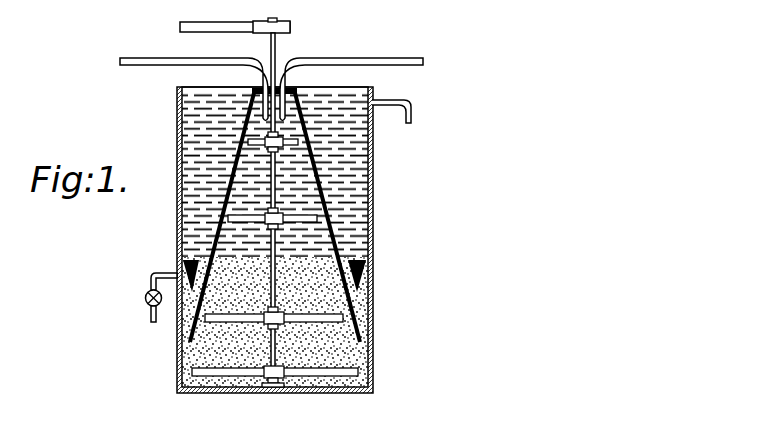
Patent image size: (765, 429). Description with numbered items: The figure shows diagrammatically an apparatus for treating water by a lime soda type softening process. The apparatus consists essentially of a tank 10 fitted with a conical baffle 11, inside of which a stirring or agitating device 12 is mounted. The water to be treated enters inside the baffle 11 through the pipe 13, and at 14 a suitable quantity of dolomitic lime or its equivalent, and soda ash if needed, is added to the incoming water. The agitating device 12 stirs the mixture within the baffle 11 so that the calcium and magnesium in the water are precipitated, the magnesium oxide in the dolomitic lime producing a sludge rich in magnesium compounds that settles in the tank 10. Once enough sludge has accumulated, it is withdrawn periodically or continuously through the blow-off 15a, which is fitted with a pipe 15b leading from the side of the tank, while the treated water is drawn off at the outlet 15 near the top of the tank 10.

The tank 10 is at (372, 228).
The conical baffle 11 is at (320, 199).
The stirring or agitating device 12 is at (217, 323).
The pipe 13 is at (140, 58).
The lime inlet 14 is at (375, 58).
The treated water outlet 15 is at (412, 109).
The blow-off 15a is at (145, 298).
The drain pipe 15b is at (177, 267).